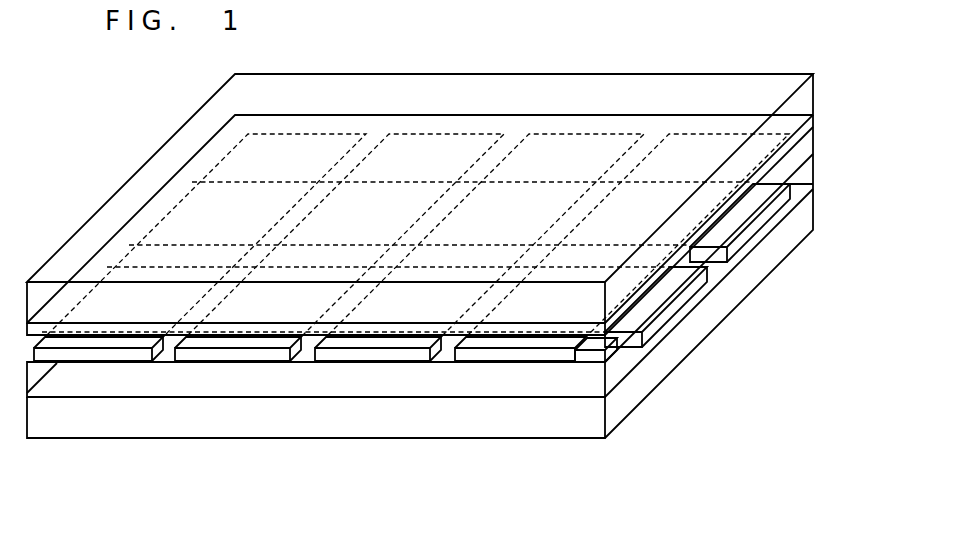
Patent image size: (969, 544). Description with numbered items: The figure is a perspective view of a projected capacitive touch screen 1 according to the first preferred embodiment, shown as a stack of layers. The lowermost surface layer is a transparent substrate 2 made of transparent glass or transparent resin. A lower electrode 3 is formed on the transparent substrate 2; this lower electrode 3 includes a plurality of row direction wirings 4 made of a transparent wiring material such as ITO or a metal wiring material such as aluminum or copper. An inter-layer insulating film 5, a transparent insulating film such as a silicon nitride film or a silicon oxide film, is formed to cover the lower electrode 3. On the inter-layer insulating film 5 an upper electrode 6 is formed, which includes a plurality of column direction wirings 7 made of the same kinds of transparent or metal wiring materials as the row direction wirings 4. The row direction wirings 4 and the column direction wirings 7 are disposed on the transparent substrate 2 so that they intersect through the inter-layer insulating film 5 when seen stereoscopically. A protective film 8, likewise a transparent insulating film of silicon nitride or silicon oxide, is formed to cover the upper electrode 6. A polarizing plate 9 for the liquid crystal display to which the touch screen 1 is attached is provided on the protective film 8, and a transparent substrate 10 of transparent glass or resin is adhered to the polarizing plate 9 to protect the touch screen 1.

The touch screen 1 is at (71, 82).
The transparent substrate 2 is at (53, 403).
The lower electrode 3 is at (427, 304).
The row direction wirings 4 is at (670, 310).
The inter-layer insulating film 5 is at (623, 357).
The upper electrode 6 is at (411, 334).
The column direction wirings 7 is at (518, 487).
The protective film 8 is at (596, 351).
The polarizing plate 9 is at (790, 152).
The transparent substrate 10 is at (805, 100).